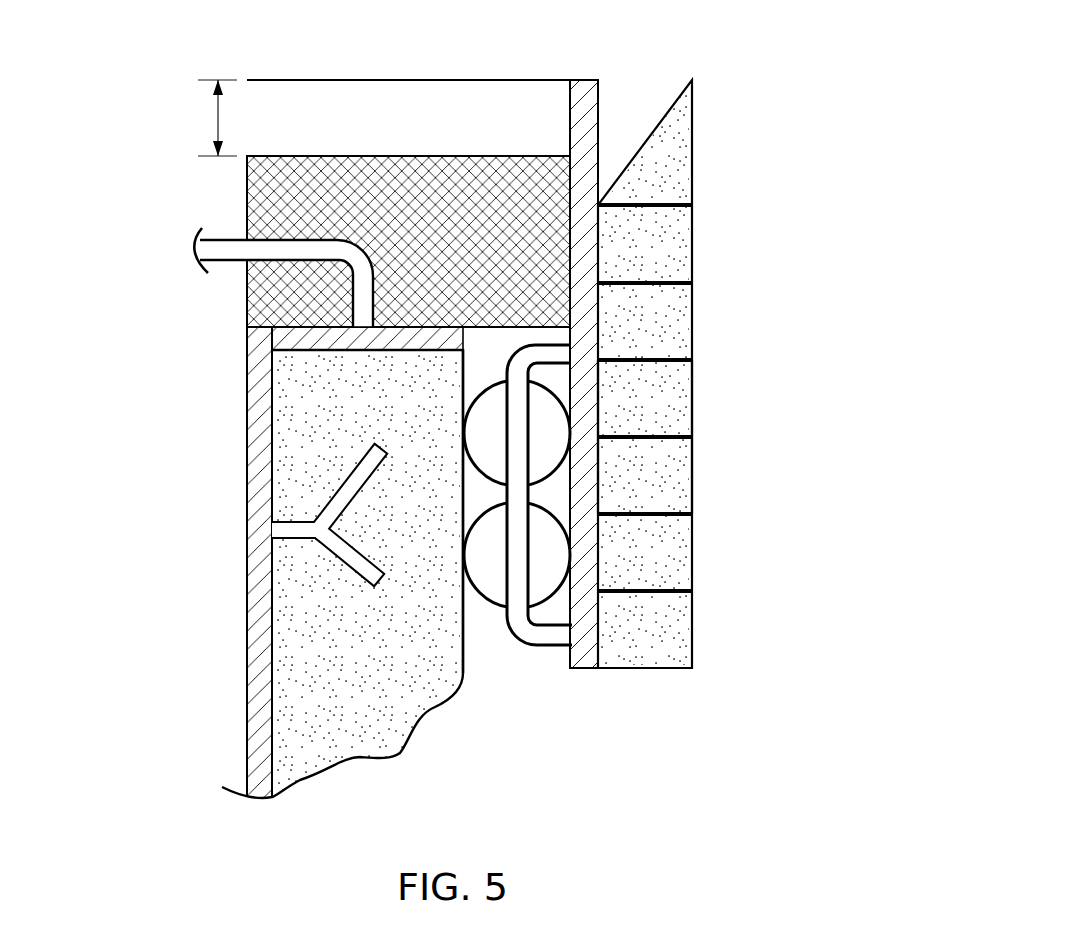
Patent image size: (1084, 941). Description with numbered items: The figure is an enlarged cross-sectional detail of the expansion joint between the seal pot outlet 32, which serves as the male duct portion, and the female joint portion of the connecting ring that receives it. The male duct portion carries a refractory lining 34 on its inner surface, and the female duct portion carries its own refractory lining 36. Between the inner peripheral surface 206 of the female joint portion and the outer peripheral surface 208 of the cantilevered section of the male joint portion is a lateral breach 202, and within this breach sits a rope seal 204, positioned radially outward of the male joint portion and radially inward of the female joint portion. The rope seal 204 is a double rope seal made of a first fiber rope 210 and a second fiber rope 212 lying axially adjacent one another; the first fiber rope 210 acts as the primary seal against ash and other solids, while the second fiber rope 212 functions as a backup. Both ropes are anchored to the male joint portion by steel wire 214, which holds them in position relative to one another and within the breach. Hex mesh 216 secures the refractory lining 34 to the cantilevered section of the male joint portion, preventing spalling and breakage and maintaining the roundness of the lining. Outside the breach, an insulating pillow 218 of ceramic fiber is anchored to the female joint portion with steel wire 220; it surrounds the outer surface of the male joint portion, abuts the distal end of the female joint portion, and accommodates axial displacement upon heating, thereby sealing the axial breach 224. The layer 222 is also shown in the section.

The seal pot outlet 32 is at (753, 374).
The refractory lining 34 is at (662, 383).
The refractory lining 36 is at (295, 593).
The lateral breach 202 is at (520, 705).
The rope seal 204 is at (612, 497).
The inner peripheral surface 206 is at (468, 663).
The outer peripheral surface 208 is at (567, 665).
The first fiber rope 210 is at (555, 552).
The second fiber rope 212 is at (545, 453).
The steel wire 214 is at (545, 355).
The hex mesh 216 is at (655, 437).
The insulating pillow 218 is at (470, 178).
The steel wire 220 is at (292, 250).
The base layer 222 is at (338, 336).
The axial breach 224 is at (218, 118).